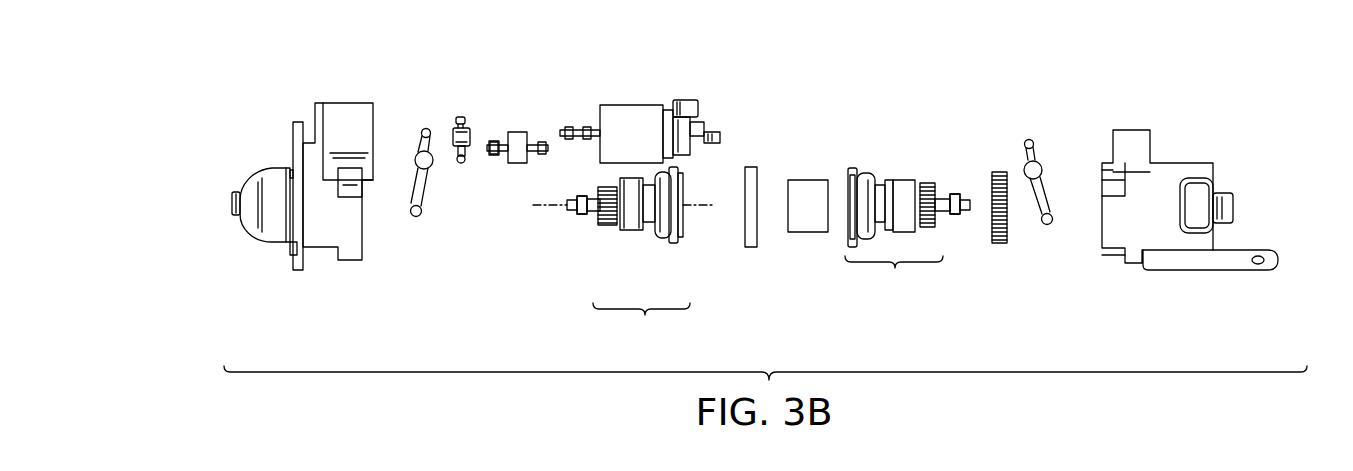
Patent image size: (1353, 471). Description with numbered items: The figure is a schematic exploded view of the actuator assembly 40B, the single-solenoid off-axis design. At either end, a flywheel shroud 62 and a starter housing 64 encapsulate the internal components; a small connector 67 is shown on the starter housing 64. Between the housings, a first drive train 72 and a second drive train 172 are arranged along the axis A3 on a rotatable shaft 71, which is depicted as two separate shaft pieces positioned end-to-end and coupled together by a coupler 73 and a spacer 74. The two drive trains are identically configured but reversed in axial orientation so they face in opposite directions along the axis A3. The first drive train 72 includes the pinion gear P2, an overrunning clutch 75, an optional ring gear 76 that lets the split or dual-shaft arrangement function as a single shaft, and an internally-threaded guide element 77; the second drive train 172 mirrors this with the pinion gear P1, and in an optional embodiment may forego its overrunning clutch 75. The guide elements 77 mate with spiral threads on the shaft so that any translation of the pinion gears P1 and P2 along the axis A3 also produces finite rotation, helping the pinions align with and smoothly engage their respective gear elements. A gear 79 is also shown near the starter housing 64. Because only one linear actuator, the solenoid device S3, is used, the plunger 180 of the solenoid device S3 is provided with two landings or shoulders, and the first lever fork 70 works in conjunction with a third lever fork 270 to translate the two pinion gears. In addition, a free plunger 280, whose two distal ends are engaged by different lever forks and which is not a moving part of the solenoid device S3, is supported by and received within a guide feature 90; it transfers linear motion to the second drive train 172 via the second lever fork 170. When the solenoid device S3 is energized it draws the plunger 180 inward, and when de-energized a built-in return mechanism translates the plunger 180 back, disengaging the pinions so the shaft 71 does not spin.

The actuator assembly 40B is at (1158, 55).
The flywheel shroud 62 is at (316, 279).
The starter housing 64 is at (1190, 265).
The connector 67 is at (1198, 186).
The first lever fork 70 is at (415, 226).
The second lever fork 170 is at (1043, 236).
The third lever fork 270 is at (460, 174).
The free plunger 280 is at (495, 172).
The guide feature 90 is at (515, 131).
The plunger 180 is at (570, 127).
The solenoid device S3 is at (647, 95).
The axis A3 is at (690, 207).
The rotatable shaft 71 is at (572, 213).
The first drive train 72 is at (641, 323).
The second drive train 172 is at (894, 276).
The coupler 73 is at (807, 244).
The spacer 74 is at (754, 167).
The overrunning clutch 75 is at (630, 233).
The ring gear 76 is at (680, 245).
The guide element 77 is at (648, 231).
The gear 79 is at (995, 250).
The pinion gear P1 is at (930, 190).
The pinion gear P2 is at (606, 226).